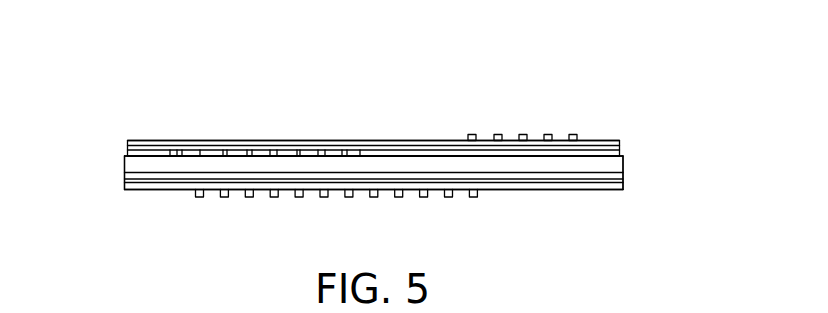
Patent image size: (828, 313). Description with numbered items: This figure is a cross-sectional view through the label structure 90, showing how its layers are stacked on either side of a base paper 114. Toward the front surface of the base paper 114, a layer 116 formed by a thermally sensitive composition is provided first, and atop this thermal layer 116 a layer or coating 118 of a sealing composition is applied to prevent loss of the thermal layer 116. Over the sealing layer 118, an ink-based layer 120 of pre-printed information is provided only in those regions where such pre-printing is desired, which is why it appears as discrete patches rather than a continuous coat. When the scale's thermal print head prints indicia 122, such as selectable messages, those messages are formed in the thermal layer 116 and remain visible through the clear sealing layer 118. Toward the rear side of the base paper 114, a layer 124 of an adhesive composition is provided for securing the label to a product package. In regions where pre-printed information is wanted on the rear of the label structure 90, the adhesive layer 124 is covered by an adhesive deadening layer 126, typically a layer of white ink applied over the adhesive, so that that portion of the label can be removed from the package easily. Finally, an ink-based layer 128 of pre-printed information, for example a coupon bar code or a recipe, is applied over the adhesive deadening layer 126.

The label structure 90 is at (374, 99).
The base paper 114 is at (623, 168).
The thermal layer 116 is at (620, 153).
The sealing layer 118 is at (620, 143).
The ink-based layer of pre-printed information 120 is at (578, 134).
The indicia 122 is at (176, 151).
The adhesive layer 124 is at (124, 172).
The adhesive deadening layer 126 is at (124, 187).
The ink-based layer of pre-printed information 128 is at (226, 197).